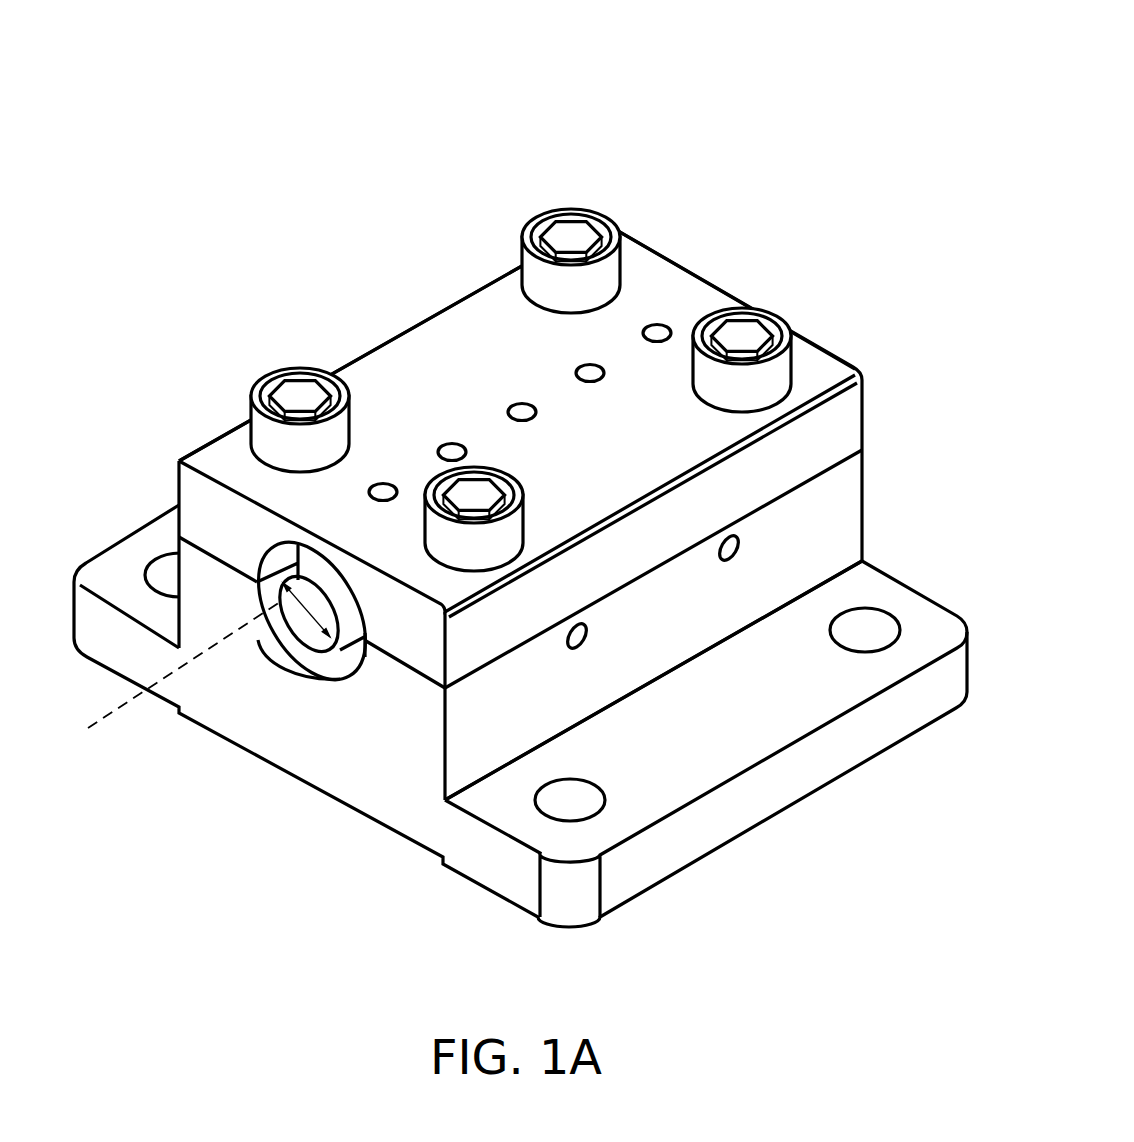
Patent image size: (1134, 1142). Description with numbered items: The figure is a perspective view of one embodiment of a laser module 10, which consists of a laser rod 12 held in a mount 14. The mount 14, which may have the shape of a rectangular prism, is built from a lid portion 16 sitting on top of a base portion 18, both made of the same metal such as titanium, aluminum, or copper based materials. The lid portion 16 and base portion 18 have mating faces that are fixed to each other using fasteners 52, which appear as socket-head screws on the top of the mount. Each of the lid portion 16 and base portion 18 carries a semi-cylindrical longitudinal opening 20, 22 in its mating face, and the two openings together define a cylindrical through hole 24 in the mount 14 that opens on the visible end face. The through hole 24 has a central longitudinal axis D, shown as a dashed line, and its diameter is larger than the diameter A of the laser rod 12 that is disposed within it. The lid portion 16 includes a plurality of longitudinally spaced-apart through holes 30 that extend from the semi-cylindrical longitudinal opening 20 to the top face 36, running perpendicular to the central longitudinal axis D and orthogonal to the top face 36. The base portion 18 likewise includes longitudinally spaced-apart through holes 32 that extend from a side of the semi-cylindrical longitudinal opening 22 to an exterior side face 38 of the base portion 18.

The laser module 10 is at (668, 172).
The laser rod 12 is at (356, 625).
The mount 14 is at (886, 470).
The lid portion 16 is at (665, 277).
The base portion 18 is at (934, 700).
The semi-cylindrical longitudinal opening 20 is at (270, 563).
The semi-cylindrical longitudinal opening 22 is at (272, 603).
The cylindrical through hole 24 is at (322, 686).
The through holes 30 is at (657, 330).
The through holes 32 is at (724, 562).
The top face 36 is at (382, 362).
The side face 38 is at (840, 532).
The fasteners 52 is at (538, 232).
The diameter A is at (306, 610).
The central longitudinal axis D is at (172, 679).